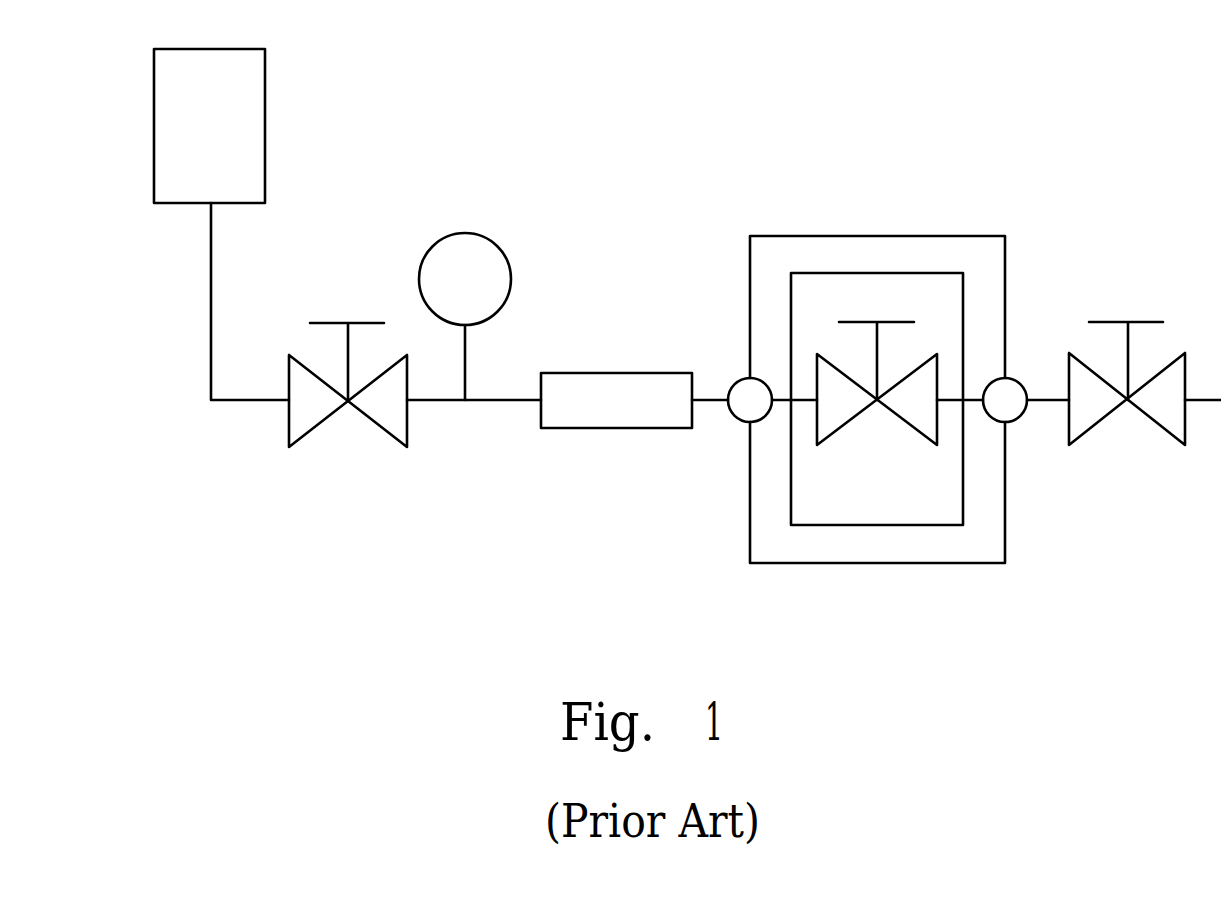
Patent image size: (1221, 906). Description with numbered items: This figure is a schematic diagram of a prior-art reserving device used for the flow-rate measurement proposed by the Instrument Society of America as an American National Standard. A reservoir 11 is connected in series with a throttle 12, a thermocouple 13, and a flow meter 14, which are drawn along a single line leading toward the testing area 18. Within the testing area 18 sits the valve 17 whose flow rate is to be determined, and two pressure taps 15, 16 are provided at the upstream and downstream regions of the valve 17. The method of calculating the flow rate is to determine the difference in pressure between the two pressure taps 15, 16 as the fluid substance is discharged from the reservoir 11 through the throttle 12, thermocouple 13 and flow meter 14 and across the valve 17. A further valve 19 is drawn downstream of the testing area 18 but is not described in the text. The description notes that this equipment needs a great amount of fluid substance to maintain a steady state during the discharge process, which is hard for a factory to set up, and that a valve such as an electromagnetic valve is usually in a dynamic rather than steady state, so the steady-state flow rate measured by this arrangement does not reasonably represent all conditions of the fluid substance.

The reservoir 11 is at (240, 130).
The throttle 12 is at (307, 411).
The thermocouple 13 is at (470, 272).
The flow meter 14 is at (650, 400).
The pressure tap 15 is at (748, 405).
The pressure tap 16 is at (1005, 405).
The valve 17 is at (856, 322).
The testing area 18 is at (957, 233).
The second valve 19 is at (1087, 410).